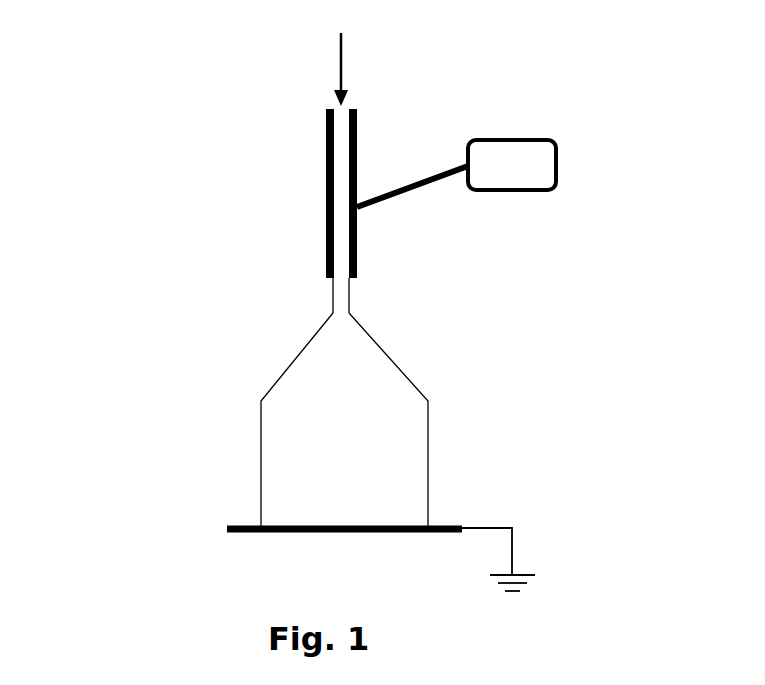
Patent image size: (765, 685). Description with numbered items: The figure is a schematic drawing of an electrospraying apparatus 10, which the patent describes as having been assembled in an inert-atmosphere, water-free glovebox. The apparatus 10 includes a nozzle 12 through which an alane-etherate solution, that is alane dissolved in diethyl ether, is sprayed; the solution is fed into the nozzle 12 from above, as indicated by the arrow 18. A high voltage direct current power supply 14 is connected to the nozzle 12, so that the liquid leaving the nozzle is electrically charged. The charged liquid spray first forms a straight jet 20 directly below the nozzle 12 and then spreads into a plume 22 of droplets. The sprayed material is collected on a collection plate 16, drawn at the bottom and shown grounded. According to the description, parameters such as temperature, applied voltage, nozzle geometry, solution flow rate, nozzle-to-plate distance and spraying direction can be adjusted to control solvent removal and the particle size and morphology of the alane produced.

The apparatus 10 is at (176, 168).
The nozzle 12 is at (326, 187).
The high voltage direct current power supply 14 is at (540, 142).
The collection plate 16 is at (251, 524).
The polymer solution feed direction 18 is at (343, 74).
The straight jet 20 is at (351, 297).
The plume 22 is at (410, 378).